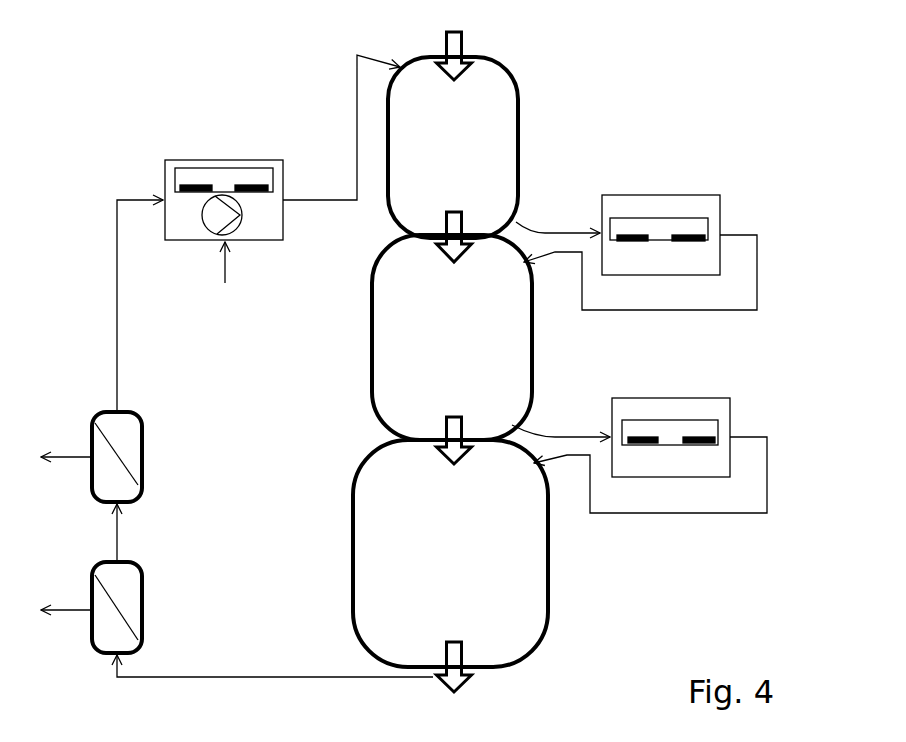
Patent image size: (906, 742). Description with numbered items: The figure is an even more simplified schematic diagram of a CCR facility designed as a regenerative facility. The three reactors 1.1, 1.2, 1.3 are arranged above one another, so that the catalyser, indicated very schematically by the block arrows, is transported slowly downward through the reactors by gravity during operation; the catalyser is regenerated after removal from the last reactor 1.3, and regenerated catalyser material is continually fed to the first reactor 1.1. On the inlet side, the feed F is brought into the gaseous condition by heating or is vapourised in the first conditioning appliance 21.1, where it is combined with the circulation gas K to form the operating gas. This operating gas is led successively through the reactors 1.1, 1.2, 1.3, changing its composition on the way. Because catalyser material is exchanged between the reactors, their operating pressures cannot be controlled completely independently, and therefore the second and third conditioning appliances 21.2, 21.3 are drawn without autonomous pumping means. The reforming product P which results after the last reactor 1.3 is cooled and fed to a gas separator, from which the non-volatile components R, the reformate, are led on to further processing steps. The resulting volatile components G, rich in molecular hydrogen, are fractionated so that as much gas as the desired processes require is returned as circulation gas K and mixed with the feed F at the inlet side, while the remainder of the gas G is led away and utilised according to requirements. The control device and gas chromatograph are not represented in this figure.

The first reactor 1.1 is at (502, 113).
The second reactor 1.2 is at (400, 327).
The third reactor 1.3 is at (388, 530).
The first conditioning appliance 21.1 is at (272, 198).
The second conditioning appliance 21.2 is at (690, 202).
The third conditioning appliance 21.3 is at (718, 402).
The circulation gas K is at (140, 292).
The feed F is at (215, 264).
The volatile components G is at (126, 532).
The non-volatile components (reformate) R is at (66, 630).
The reforming product P is at (275, 664).